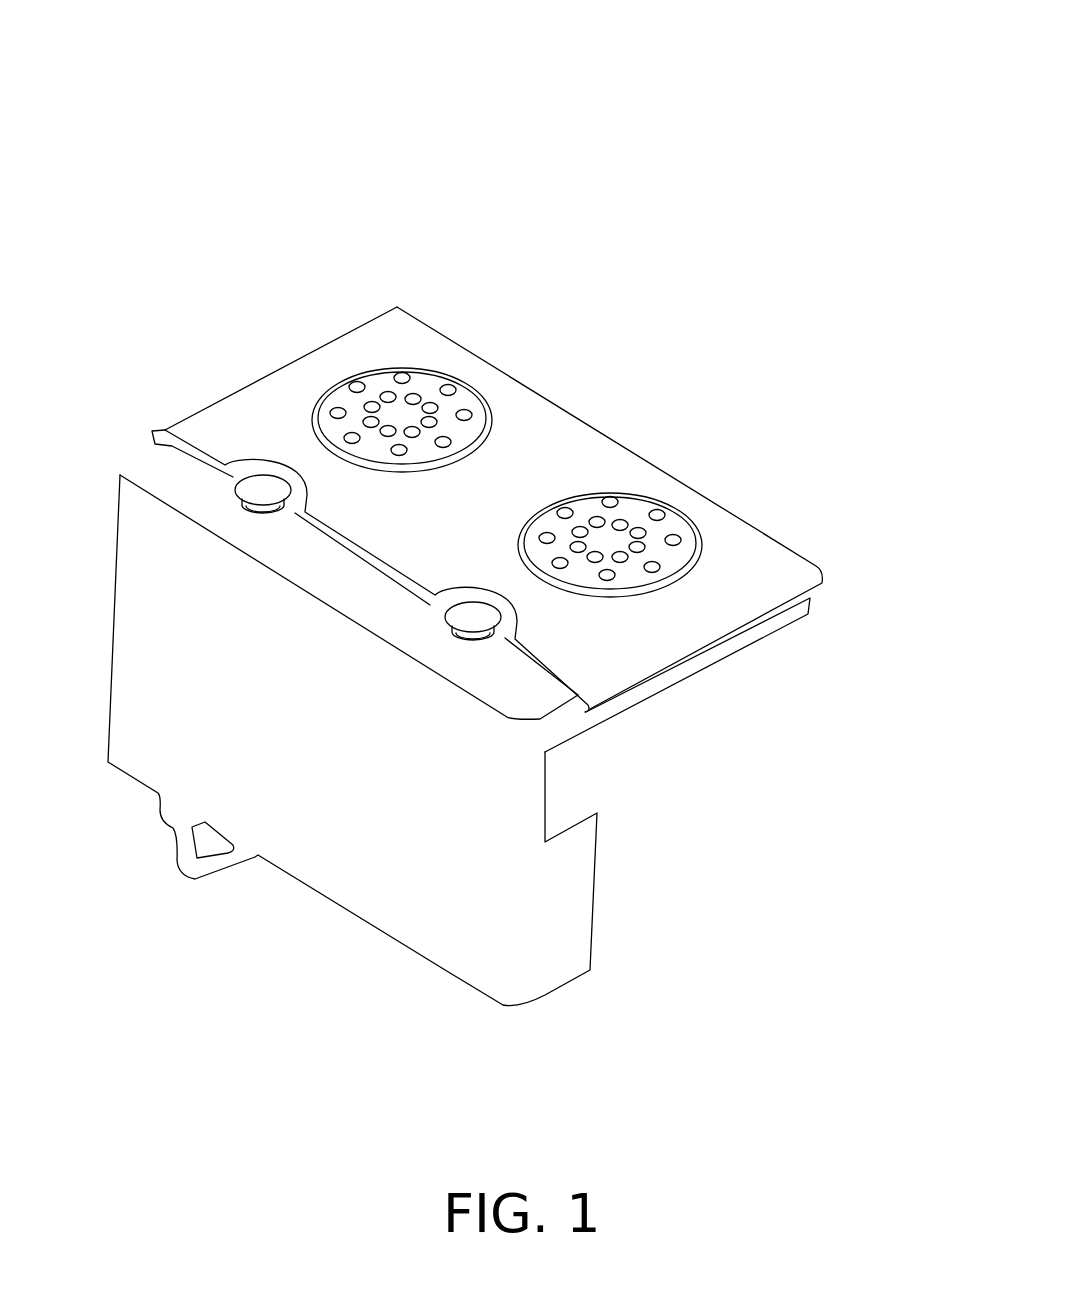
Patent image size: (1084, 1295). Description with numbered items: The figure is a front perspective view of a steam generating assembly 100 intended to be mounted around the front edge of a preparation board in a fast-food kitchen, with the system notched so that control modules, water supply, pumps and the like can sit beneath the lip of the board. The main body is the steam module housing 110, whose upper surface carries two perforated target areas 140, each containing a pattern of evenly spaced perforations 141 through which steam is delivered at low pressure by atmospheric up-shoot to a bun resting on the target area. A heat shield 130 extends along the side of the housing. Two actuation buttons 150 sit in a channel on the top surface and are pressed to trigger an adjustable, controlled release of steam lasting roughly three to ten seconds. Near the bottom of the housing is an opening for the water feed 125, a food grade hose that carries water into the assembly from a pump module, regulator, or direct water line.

The steam generating assembly 100 is at (483, 136).
The steam module housing 110 is at (151, 431).
The water feed 125 is at (205, 868).
The heat shield 130 is at (718, 502).
The perforated target area 140 is at (467, 397).
The perforations 141 is at (653, 565).
The actuation button 150 is at (262, 492).